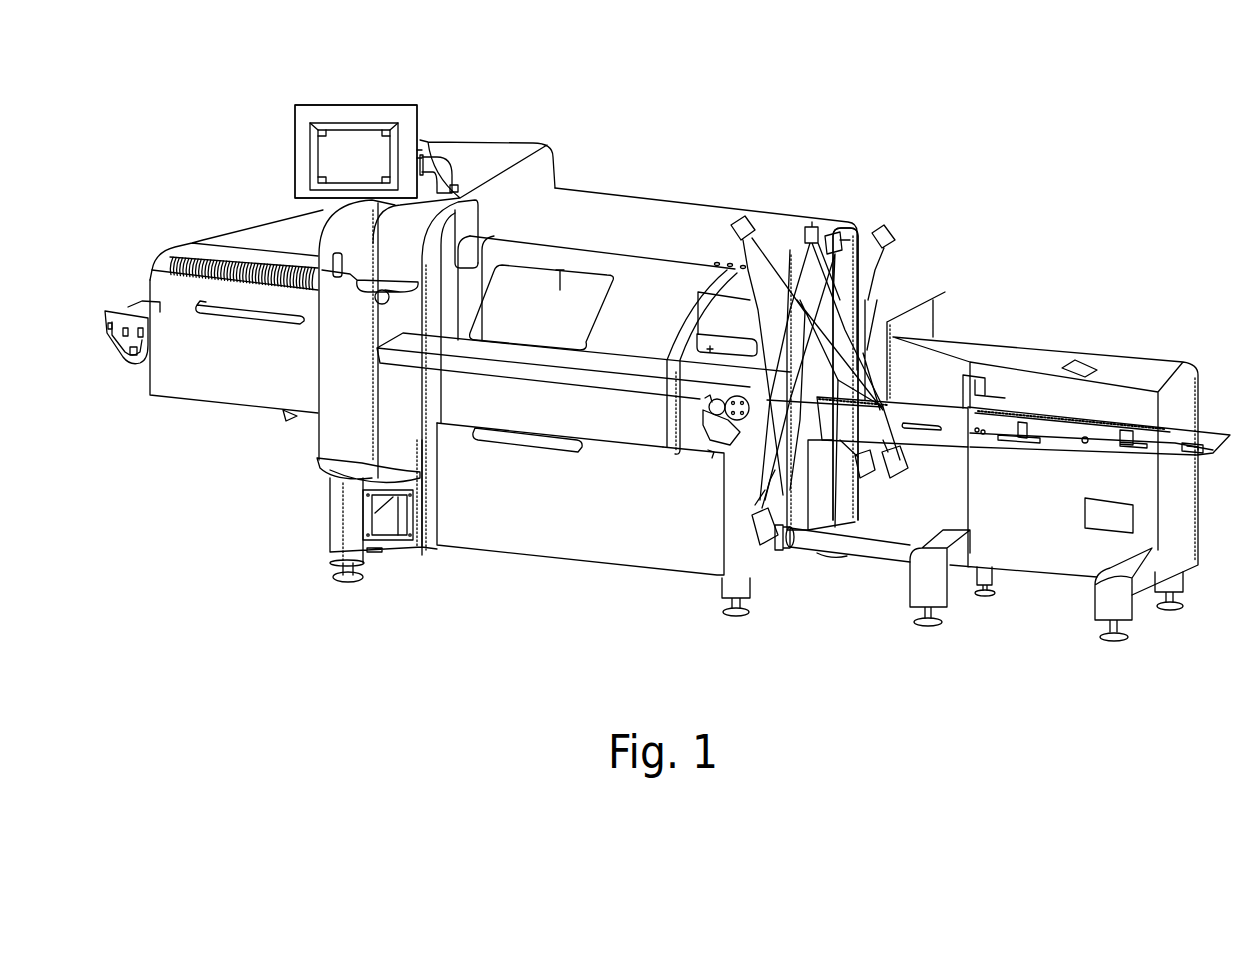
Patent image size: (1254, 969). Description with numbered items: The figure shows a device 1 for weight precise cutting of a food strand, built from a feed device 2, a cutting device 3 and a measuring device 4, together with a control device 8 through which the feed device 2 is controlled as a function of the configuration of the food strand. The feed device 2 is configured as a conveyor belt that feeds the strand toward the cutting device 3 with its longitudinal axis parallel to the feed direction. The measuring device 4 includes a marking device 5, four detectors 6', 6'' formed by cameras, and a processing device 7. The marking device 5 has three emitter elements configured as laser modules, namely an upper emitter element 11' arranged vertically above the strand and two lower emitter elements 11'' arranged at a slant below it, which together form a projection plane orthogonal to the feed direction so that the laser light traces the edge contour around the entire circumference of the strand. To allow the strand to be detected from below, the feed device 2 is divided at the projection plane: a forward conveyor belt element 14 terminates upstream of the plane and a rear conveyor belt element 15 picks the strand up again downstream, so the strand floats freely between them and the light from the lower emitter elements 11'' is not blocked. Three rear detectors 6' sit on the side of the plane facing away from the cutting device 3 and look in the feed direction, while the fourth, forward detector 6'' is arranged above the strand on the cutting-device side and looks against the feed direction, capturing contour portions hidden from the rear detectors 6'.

The device 1 is at (908, 188).
The feed device 2 is at (1207, 432).
The cutting device 3 is at (634, 228).
The measuring device 4 is at (815, 212).
The marking device 5 is at (845, 374).
The rear detectors 6' is at (890, 404).
The forward detector 6'' is at (768, 312).
The processing device 7 is at (487, 121).
The control device 8 is at (356, 151).
The upper emitter element 11' is at (824, 319).
The lower emitter elements 11'' is at (785, 551).
The forward conveyor belt element 14 is at (887, 347).
The rear conveyor belt element 15 is at (700, 377).